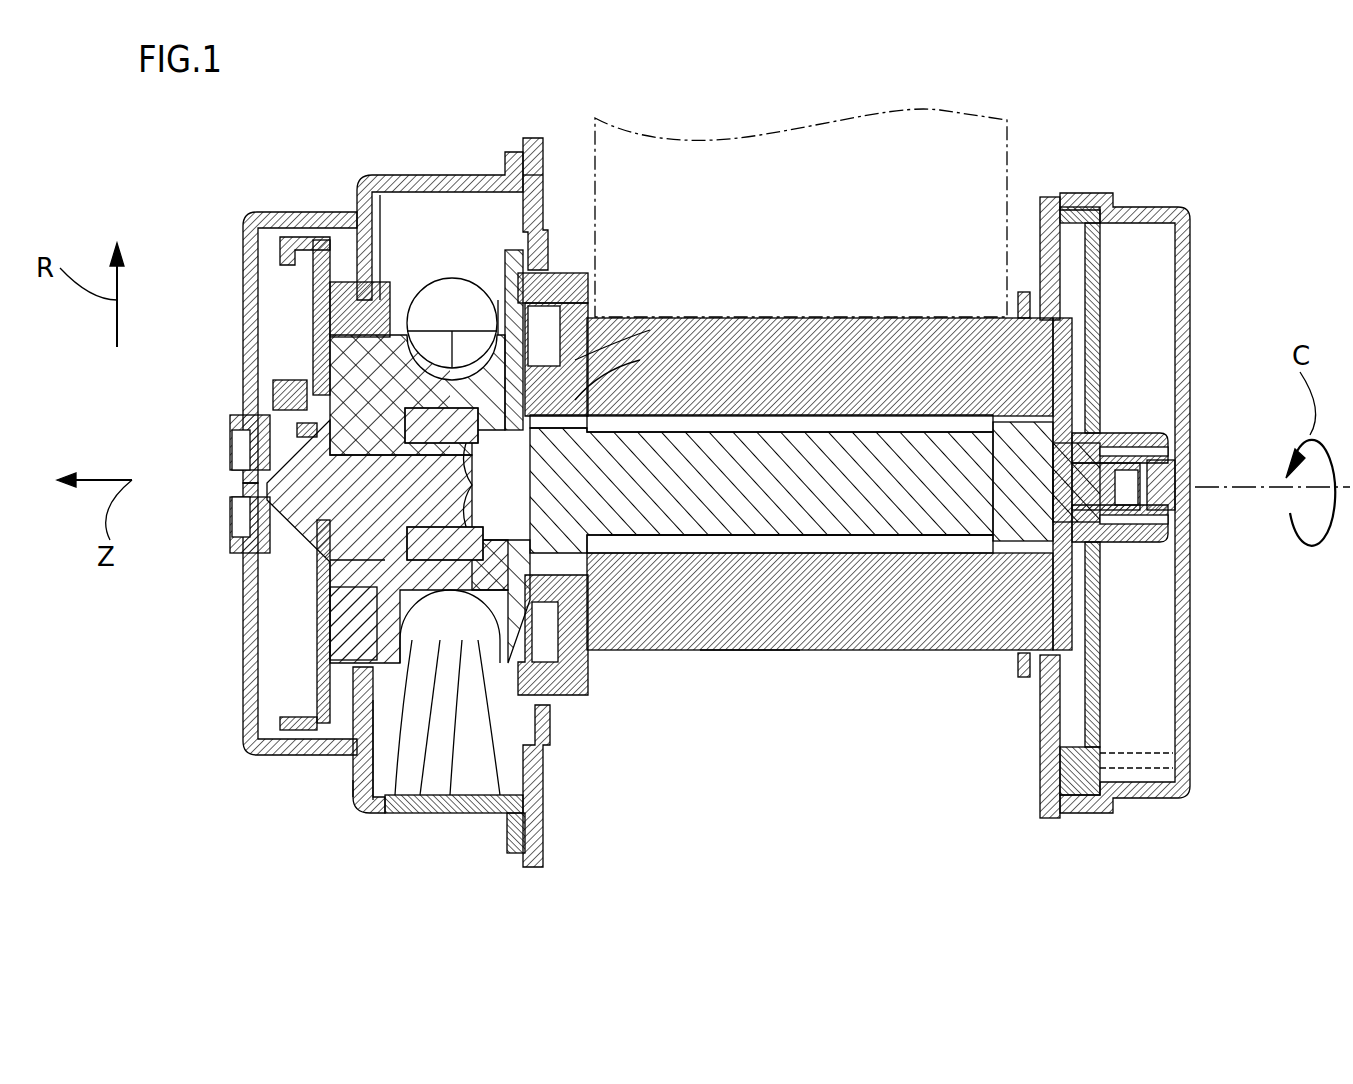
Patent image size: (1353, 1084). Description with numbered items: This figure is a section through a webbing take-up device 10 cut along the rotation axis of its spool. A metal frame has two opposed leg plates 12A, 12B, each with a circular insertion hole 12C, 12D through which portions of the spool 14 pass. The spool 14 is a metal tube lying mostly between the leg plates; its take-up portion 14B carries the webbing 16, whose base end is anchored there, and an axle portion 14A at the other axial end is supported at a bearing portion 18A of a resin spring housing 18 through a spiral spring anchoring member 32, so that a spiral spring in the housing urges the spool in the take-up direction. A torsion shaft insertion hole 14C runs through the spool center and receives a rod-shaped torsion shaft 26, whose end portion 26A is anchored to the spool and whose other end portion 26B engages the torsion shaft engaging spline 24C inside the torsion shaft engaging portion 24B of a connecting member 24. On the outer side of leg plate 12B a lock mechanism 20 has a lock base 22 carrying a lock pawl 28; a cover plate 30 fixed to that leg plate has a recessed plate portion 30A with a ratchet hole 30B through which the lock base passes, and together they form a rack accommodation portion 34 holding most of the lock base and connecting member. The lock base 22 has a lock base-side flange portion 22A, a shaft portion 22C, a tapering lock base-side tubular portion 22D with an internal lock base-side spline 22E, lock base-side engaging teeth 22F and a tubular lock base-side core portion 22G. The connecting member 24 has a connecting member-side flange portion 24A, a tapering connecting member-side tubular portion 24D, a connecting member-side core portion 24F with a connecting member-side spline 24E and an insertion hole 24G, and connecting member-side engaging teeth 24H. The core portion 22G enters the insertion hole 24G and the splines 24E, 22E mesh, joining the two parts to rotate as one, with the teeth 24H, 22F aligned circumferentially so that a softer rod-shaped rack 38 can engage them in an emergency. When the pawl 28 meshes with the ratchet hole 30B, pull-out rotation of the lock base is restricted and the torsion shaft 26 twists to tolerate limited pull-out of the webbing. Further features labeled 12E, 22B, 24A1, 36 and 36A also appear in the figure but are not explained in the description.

The webbing take-up device 10 is at (1192, 148).
The leg plate 12A is at (1060, 200).
The leg plate 12B is at (537, 140).
The insertion hole 12C is at (1100, 330).
The insertion hole 12D is at (567, 273).
The housing flange portion 12E is at (523, 175).
The spool 14 is at (843, 660).
The axle portion 14A is at (1105, 470).
The take-up portion 14B is at (754, 653).
The torsion shaft insertion hole 14C is at (888, 548).
The webbing 16 is at (690, 132).
The spring housing 18 is at (1193, 212).
The bearing portion 18A is at (1165, 490).
The lock mechanism 20 is at (340, 243).
The lock base 22 is at (420, 212).
The lock base-side flange portion 22A is at (410, 278).
The yoke bottom portion 22B is at (360, 672).
The shaft portion 22C is at (245, 470).
The lock base-side tubular portion 22D is at (380, 800).
The lock base-side spline 22E is at (400, 560).
The lock base-side engaging teeth 22F is at (403, 815).
The lock base-side core portion 22G is at (580, 500).
The connecting member 24 is at (498, 700).
The connecting member-side flange portion 24A is at (478, 645).
The resin body end portion 24A1 is at (498, 332).
The torsion shaft engaging portion 24B is at (575, 400).
The torsion shaft engaging spline 24C is at (575, 360).
The connecting member-side tubular portion 24D is at (462, 645).
The connecting member-side spline 24E is at (450, 600).
The connecting member-side core portion 24F is at (340, 370).
The insertion hole 24G is at (350, 410).
The connecting member-side engaging teeth 24H is at (448, 645).
The torsion shaft 26 is at (890, 428).
The end portion 26A is at (1030, 444).
The end portion 26B is at (548, 480).
The lock pawl 28 is at (330, 305).
The cover plate 30 is at (365, 812).
The plate portion 30A is at (350, 772).
The ratchet hole 30B is at (350, 300).
The spiral spring anchoring member 32 is at (1135, 432).
The rack accommodation portion 34 is at (425, 185).
The cover plate 36 is at (240, 676).
The cover plate engaging portion 36A is at (262, 500).
The rack 38 is at (450, 278).